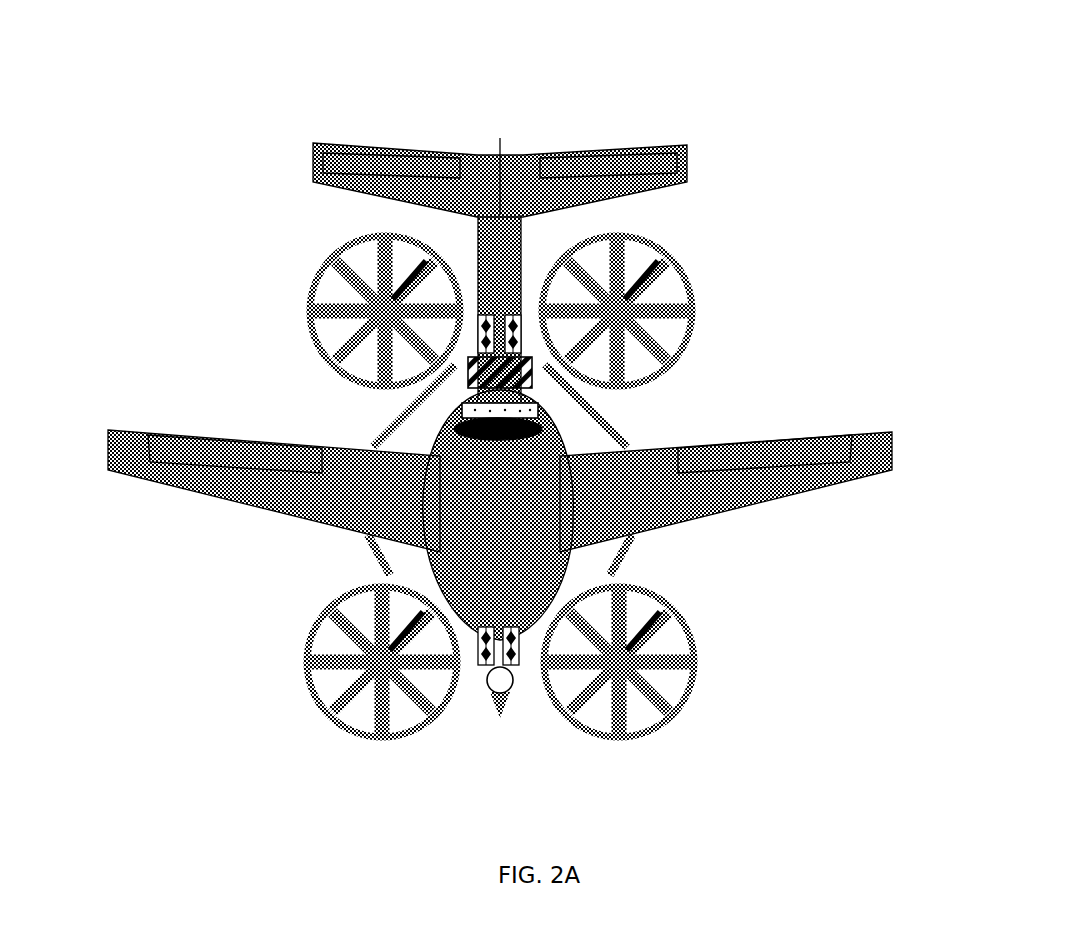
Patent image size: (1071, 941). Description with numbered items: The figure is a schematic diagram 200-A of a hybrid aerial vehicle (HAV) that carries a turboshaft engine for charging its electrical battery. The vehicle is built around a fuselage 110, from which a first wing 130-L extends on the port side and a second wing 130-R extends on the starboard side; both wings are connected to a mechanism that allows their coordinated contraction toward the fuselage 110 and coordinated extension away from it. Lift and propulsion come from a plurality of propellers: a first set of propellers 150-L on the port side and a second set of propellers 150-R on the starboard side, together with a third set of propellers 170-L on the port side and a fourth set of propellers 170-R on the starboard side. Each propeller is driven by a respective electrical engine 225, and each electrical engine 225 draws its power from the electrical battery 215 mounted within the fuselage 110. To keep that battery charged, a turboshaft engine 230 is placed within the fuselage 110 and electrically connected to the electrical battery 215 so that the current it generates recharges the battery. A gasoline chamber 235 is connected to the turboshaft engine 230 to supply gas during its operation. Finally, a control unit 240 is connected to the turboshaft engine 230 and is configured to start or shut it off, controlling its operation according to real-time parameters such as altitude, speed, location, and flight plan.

The schematic diagram of hybrid aerial vehicle 200-A is at (900, 84).
The fuselage 110 is at (558, 460).
The second wing 130-R is at (108, 437).
The first wing 130-L is at (892, 437).
The second set of propellers 150-R is at (308, 648).
The first set of propellers 150-L is at (697, 653).
The fourth set of propellers 170-R is at (307, 318).
The third set of propellers 170-L is at (692, 313).
The electrical battery 215 is at (467, 382).
The electrical engine 225 is at (480, 315).
The turboshaft engine 230 is at (455, 429).
The gasoline chamber 235 is at (538, 403).
The control unit 240 is at (500, 693).